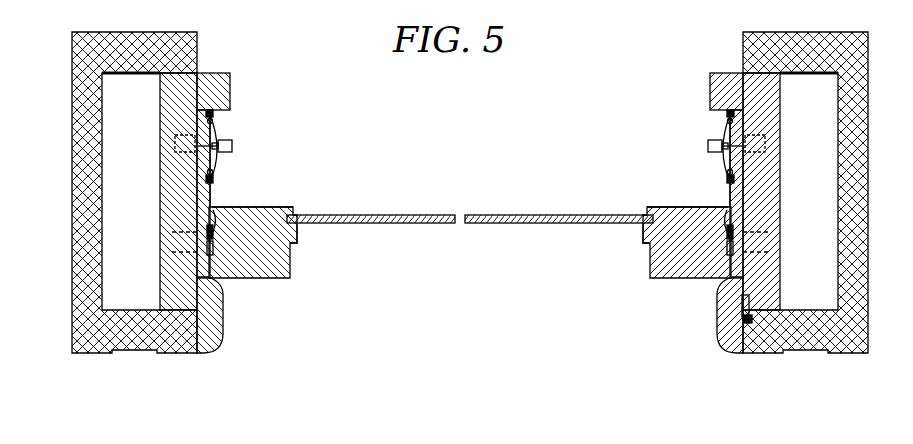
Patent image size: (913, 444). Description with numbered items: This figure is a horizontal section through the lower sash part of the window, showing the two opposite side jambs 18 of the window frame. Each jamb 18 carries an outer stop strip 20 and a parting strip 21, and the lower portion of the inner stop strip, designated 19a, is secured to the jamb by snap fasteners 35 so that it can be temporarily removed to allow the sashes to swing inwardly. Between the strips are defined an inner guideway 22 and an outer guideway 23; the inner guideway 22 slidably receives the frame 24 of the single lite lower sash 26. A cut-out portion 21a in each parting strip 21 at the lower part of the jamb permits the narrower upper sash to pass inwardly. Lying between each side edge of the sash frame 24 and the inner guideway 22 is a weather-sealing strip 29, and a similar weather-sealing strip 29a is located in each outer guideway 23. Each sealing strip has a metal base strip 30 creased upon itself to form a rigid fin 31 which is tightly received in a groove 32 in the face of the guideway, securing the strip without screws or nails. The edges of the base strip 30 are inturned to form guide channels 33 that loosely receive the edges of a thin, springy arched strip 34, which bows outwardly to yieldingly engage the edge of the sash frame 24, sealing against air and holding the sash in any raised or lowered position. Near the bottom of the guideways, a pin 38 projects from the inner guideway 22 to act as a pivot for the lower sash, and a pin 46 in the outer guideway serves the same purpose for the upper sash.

The side jamb 18 is at (95, 313).
The lower portion of inner stop strip 19a is at (222, 323).
The outer stop strip 20 is at (225, 74).
The parting strip 21 is at (180, 192).
The cut-out portion 21a is at (214, 180).
The inner guideway 22 is at (227, 279).
The outer guideway 23 is at (216, 114).
The lower sash frame 24 is at (291, 258).
The lower sash 26 is at (412, 214).
The weather-sealing strip 29 is at (222, 211).
The weather-sealing strip 29a is at (222, 135).
The base strip 30 is at (203, 158).
The fin 31 is at (205, 232).
The groove 32 is at (200, 242).
The guide channel 33 is at (216, 167).
The arched strip 34 is at (722, 140).
The snap fastener 35 is at (752, 300).
The pin 38 is at (266, 208).
The pin 46 is at (233, 146).